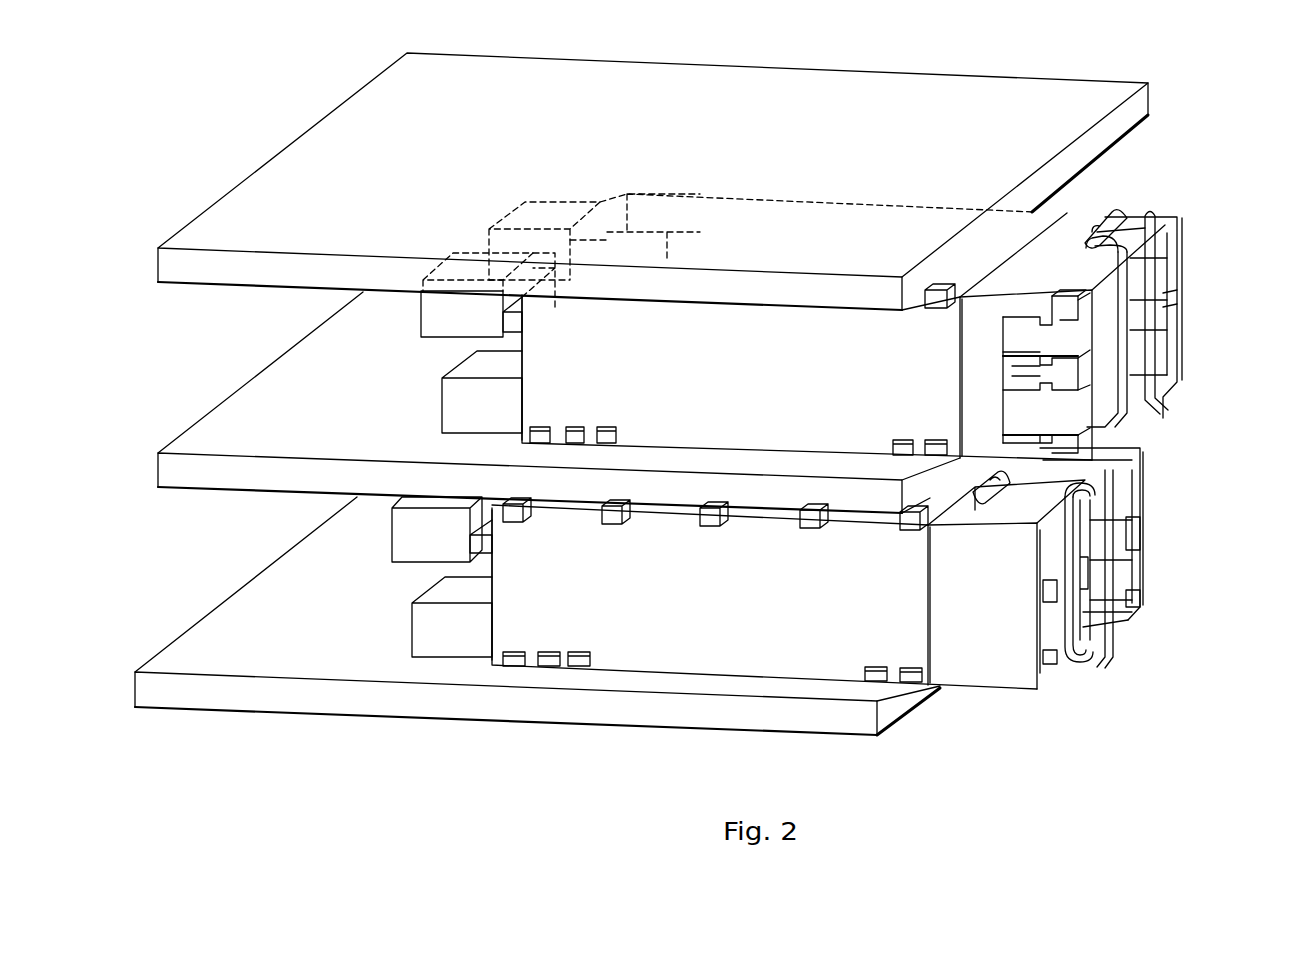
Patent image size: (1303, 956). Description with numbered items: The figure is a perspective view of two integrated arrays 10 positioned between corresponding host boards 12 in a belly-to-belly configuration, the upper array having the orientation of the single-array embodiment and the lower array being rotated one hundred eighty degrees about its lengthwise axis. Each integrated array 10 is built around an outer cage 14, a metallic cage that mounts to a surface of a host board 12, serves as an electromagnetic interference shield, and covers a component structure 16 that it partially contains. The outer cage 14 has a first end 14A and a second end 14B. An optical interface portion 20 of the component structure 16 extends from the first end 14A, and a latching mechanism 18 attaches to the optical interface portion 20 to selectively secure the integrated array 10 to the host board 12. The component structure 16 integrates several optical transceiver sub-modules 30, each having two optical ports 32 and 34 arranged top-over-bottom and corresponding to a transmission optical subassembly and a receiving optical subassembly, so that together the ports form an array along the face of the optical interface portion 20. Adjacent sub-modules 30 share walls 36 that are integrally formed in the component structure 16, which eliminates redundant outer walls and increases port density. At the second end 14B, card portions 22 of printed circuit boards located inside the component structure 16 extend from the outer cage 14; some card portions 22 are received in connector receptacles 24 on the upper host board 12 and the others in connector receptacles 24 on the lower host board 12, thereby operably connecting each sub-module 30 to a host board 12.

The integrated array 10 is at (1071, 439).
The host board 12 is at (275, 178).
The outer cage 14 is at (563, 405).
The first end 14A is at (970, 461).
The second end 14B is at (522, 362).
The component structure 16 is at (1080, 230).
The latching mechanism 18 is at (1167, 417).
The optical interface portion 20 is at (1178, 297).
The card portion 22 is at (625, 237).
The connector receptacle 24 is at (485, 240).
The optical transceiver sub-module 30 is at (1167, 253).
The optical port 32 is at (1060, 330).
The optical port 34 is at (1033, 408).
The wall 36 is at (1092, 282).